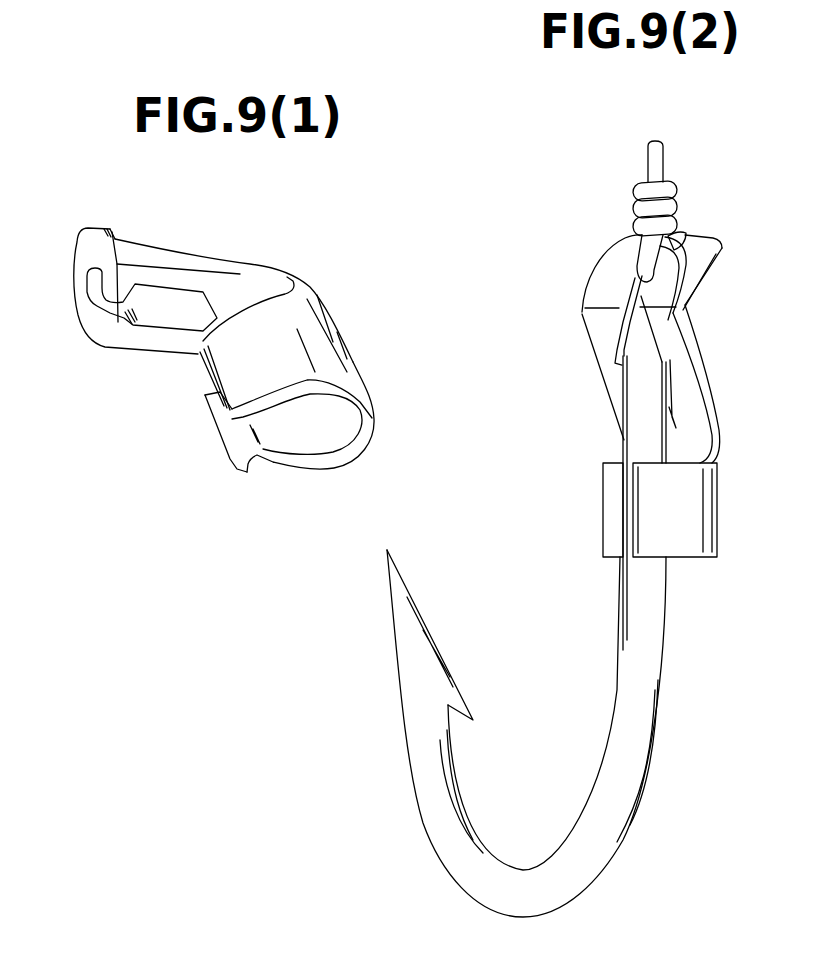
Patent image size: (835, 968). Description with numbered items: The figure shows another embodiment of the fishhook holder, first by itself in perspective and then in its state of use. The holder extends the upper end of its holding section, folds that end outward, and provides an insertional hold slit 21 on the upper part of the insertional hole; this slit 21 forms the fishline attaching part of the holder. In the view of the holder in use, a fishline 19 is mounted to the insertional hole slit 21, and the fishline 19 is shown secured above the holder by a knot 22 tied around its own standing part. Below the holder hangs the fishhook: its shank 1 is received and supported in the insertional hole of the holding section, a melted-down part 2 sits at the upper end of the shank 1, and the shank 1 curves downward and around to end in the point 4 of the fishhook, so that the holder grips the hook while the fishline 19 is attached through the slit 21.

The shank of the fishhook 1 is at (621, 733).
The melted-down part 2 is at (705, 255).
The point of the fishhook 4 is at (427, 637).
The fishline 19 is at (658, 160).
The insertional hole slit 21 is at (98, 278).
The knot 22 is at (633, 208).